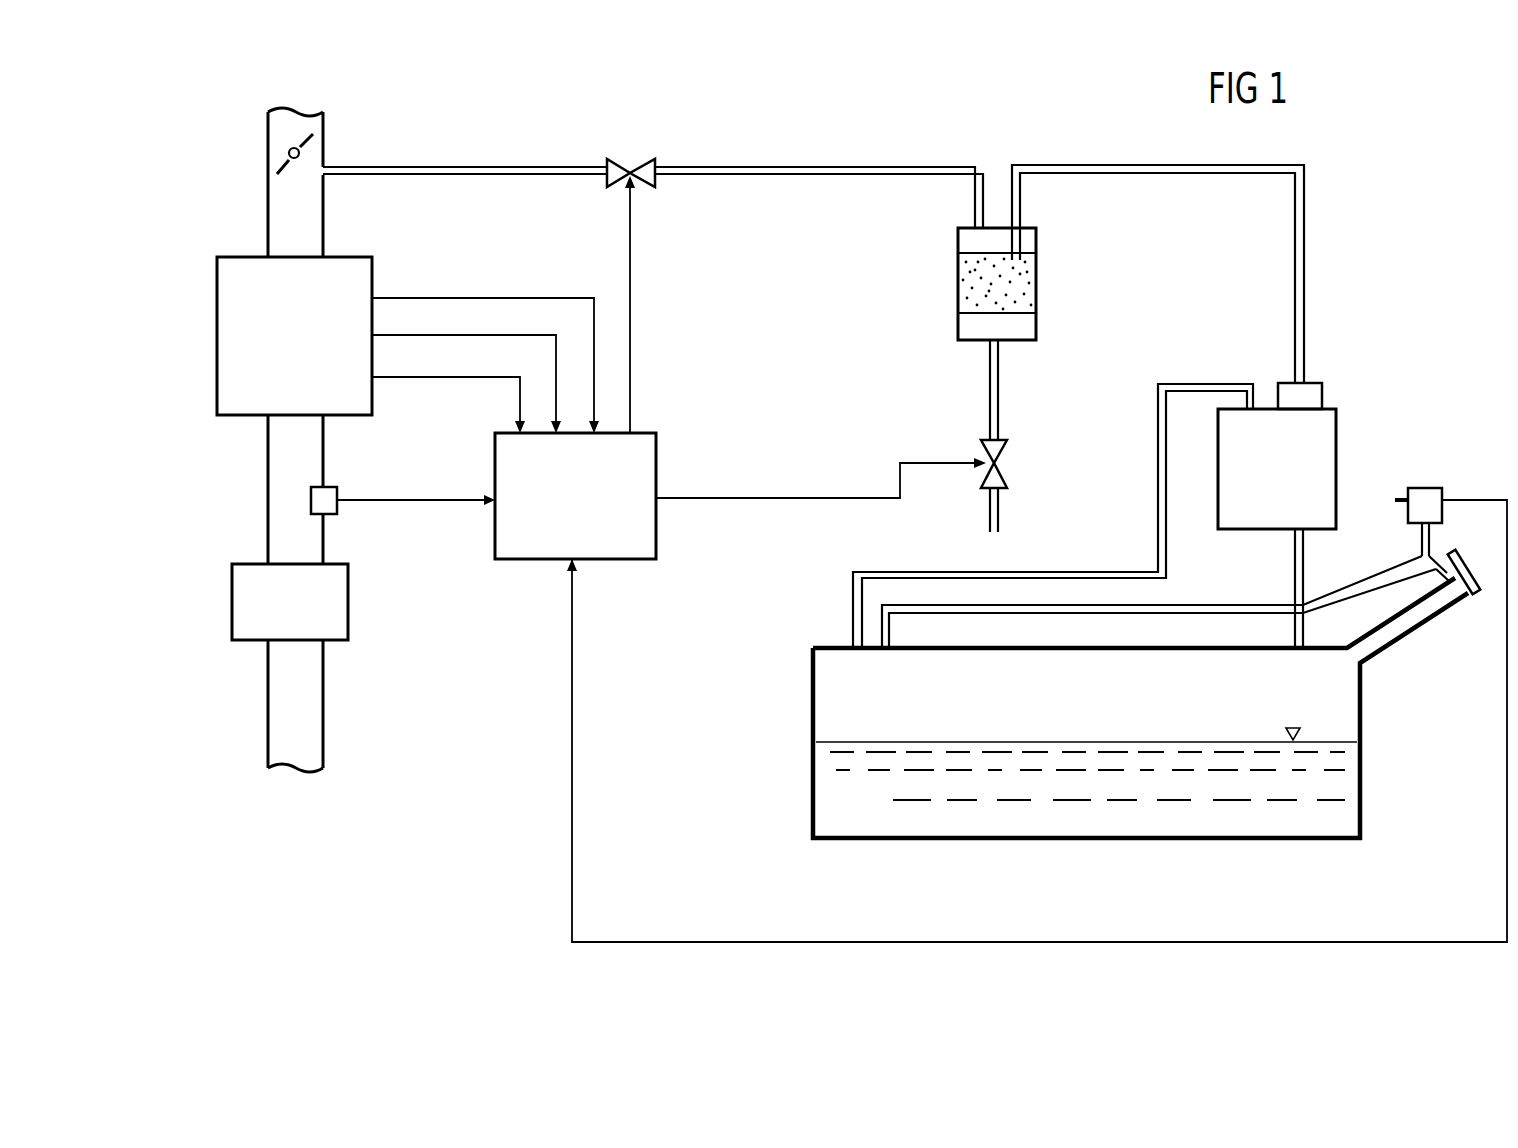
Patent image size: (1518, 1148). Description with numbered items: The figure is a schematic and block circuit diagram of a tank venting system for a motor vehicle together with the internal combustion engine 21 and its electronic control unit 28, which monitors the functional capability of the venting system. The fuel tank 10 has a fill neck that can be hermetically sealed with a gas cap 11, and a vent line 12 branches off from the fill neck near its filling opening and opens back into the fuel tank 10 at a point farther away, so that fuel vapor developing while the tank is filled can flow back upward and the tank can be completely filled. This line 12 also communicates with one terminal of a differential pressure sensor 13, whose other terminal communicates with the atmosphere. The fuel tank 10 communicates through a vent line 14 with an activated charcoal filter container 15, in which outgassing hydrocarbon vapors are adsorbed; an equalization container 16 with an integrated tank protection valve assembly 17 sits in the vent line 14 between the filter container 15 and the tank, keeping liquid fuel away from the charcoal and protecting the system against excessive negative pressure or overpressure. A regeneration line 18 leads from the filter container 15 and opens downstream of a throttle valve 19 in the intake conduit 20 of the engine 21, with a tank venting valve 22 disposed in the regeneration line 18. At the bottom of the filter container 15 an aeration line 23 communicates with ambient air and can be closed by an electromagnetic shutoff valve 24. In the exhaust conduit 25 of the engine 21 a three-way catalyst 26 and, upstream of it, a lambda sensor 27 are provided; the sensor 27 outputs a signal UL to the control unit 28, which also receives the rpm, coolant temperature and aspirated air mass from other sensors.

The fuel tank 10 is at (1338, 705).
The gas cap 11 is at (1477, 563).
The vent line 12 is at (1217, 605).
The differential pressure sensor 13 is at (1422, 503).
The vent line 14 is at (1304, 245).
The activated charcoal filter container 15 is at (1018, 325).
The equalization container 16 is at (1308, 442).
The tank protection valve assembly 17 is at (1308, 392).
The regeneration line 18 is at (815, 166).
The throttle valve 19 is at (290, 148).
The intake conduit 20 is at (268, 205).
The internal combustion engine 21 is at (245, 334).
The tank venting valve 22 is at (617, 166).
The aeration line 23 is at (998, 388).
The shutoff valve 24 is at (997, 478).
The exhaust conduit 25 is at (268, 488).
The three-way catalyst 26 is at (248, 603).
The lambda sensor 27 is at (324, 498).
The electronic control unit 28 is at (623, 540).